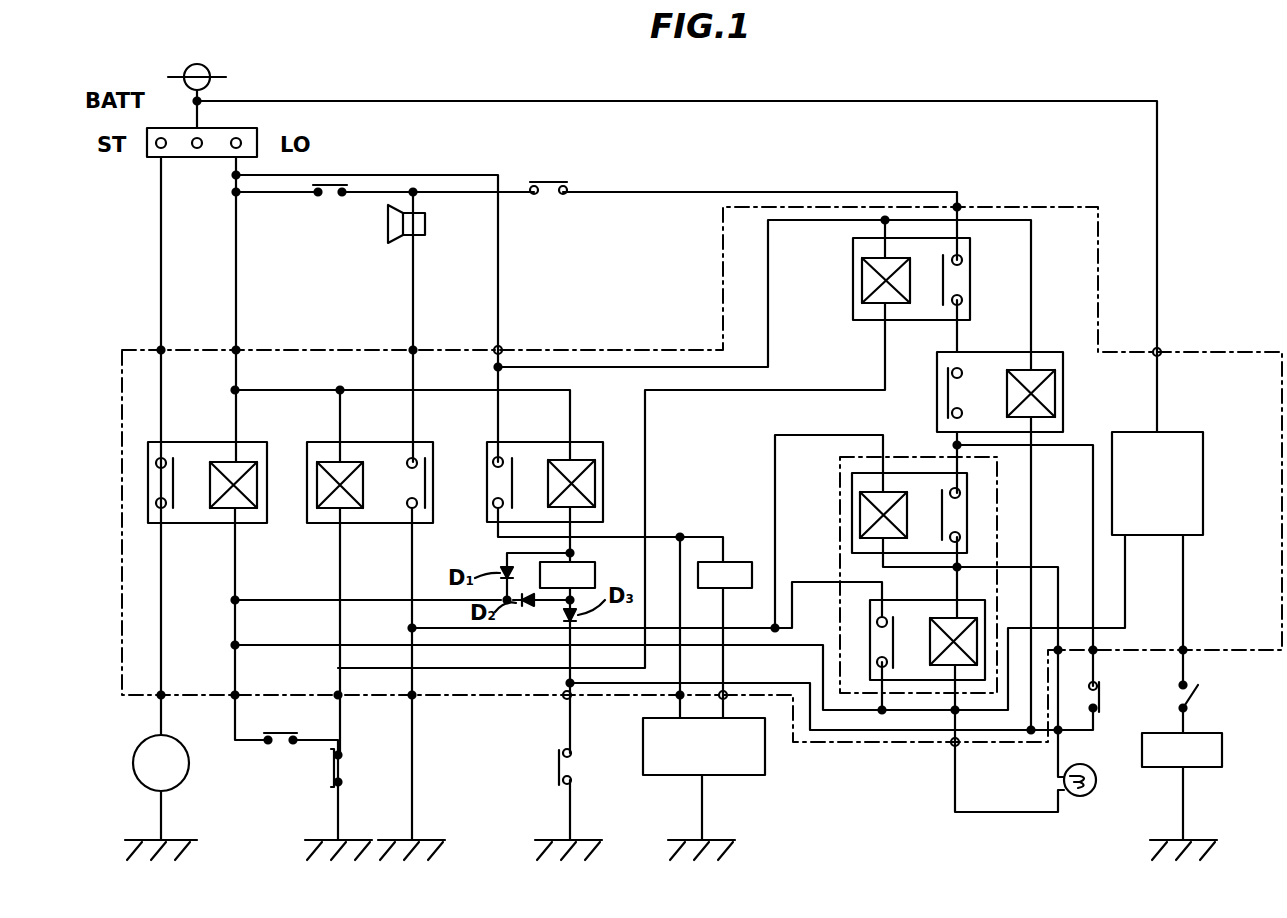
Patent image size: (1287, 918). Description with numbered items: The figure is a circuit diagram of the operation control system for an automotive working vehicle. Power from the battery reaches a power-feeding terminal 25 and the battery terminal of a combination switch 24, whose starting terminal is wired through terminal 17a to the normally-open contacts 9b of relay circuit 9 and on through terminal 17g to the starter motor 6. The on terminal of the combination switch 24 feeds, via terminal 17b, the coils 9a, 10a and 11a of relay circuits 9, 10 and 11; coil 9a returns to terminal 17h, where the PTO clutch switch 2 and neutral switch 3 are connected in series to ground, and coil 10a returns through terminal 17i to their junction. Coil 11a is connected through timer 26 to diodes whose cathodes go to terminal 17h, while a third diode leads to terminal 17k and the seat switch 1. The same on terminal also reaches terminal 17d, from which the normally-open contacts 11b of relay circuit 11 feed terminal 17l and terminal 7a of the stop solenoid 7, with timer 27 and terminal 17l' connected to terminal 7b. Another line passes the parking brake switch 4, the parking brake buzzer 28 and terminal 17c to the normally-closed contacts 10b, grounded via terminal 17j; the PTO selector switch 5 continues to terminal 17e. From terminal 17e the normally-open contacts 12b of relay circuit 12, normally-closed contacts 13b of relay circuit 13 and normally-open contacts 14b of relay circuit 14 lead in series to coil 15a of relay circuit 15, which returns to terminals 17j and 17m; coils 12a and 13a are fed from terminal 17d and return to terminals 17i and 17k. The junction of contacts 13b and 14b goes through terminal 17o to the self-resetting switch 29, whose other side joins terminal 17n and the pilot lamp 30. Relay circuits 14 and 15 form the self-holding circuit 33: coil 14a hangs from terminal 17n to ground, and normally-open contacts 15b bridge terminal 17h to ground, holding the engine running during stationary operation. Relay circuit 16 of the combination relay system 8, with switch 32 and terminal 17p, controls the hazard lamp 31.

The seat switch 1 is at (556, 764).
The PTO clutch switch 2 is at (278, 744).
The neutral switch 3 is at (340, 768).
The parking brake switch 4 is at (325, 196).
The PTO selector switch 5 is at (548, 180).
The starter motor 6 is at (133, 757).
The stop solenoid 7 is at (684, 760).
The terminal of stop solenoid 7a is at (682, 740).
The terminal of stop solenoid 7b is at (731, 740).
The combination relay system 8 is at (1210, 350).
The relay circuit 9 is at (192, 462).
The coil of relay circuit 9 9a is at (250, 480).
The normally-open contacts of relay circuit 9 9b is at (150, 495).
The relay circuit 10 is at (367, 481).
The coil of relay circuit 10 10a is at (317, 495).
The normally-closed contacts of relay circuit 10 10b is at (402, 500).
The relay circuit 11 is at (544, 476).
The coil of relay circuit 11 11a is at (595, 470).
The normally-open contacts of relay circuit 11 11b is at (505, 485).
The relay circuit 12 is at (917, 272).
The coil of relay circuit 12 12a is at (862, 283).
The normally-open contacts of relay circuit 12 12b is at (968, 280).
The relay circuit 13 is at (1006, 362).
The coil of relay circuit 13 13a is at (1055, 385).
The normally-closed contacts of relay circuit 13 13b is at (948, 393).
The relay circuit 14 is at (882, 489).
The coil of relay circuit 14 14a is at (860, 525).
The normally-open contacts of relay circuit 14 14b is at (942, 505).
The relay circuit 15 is at (896, 672).
The coil of relay circuit 15 15a is at (935, 625).
The normally-open contacts of relay circuit 15 15b is at (893, 665).
The relay circuit 16 is at (1190, 432).
The terminal 17a is at (161, 350).
The terminal 17b is at (236, 350).
The terminal 17c is at (413, 350).
The terminal 17d is at (498, 350).
The terminal 17e is at (957, 207).
The terminal 17g is at (161, 695).
The terminal 17h is at (235, 695).
The terminal 17i is at (338, 695).
The terminal 17j is at (412, 695).
The terminal 17k is at (567, 695).
The terminal 17l is at (642, 715).
The terminal 17l' is at (761, 676).
The terminal 17m is at (955, 742).
The terminal 17n is at (1058, 650).
The terminal 17o is at (1093, 650).
The terminal 17p is at (1183, 650).
The combination switch 24 is at (147, 157).
The power-feeding terminal 25 is at (208, 66).
The timer 26 is at (595, 570).
The timer 27 is at (735, 562).
The parking brake buzzer 28 is at (425, 228).
The self-resetting switch 29 is at (1100, 698).
The pilot lamp 30 is at (1098, 790).
The hazard lamp 31 is at (1222, 745).
The switch 32 is at (1200, 700).
The self-holding circuit 33 is at (997, 530).